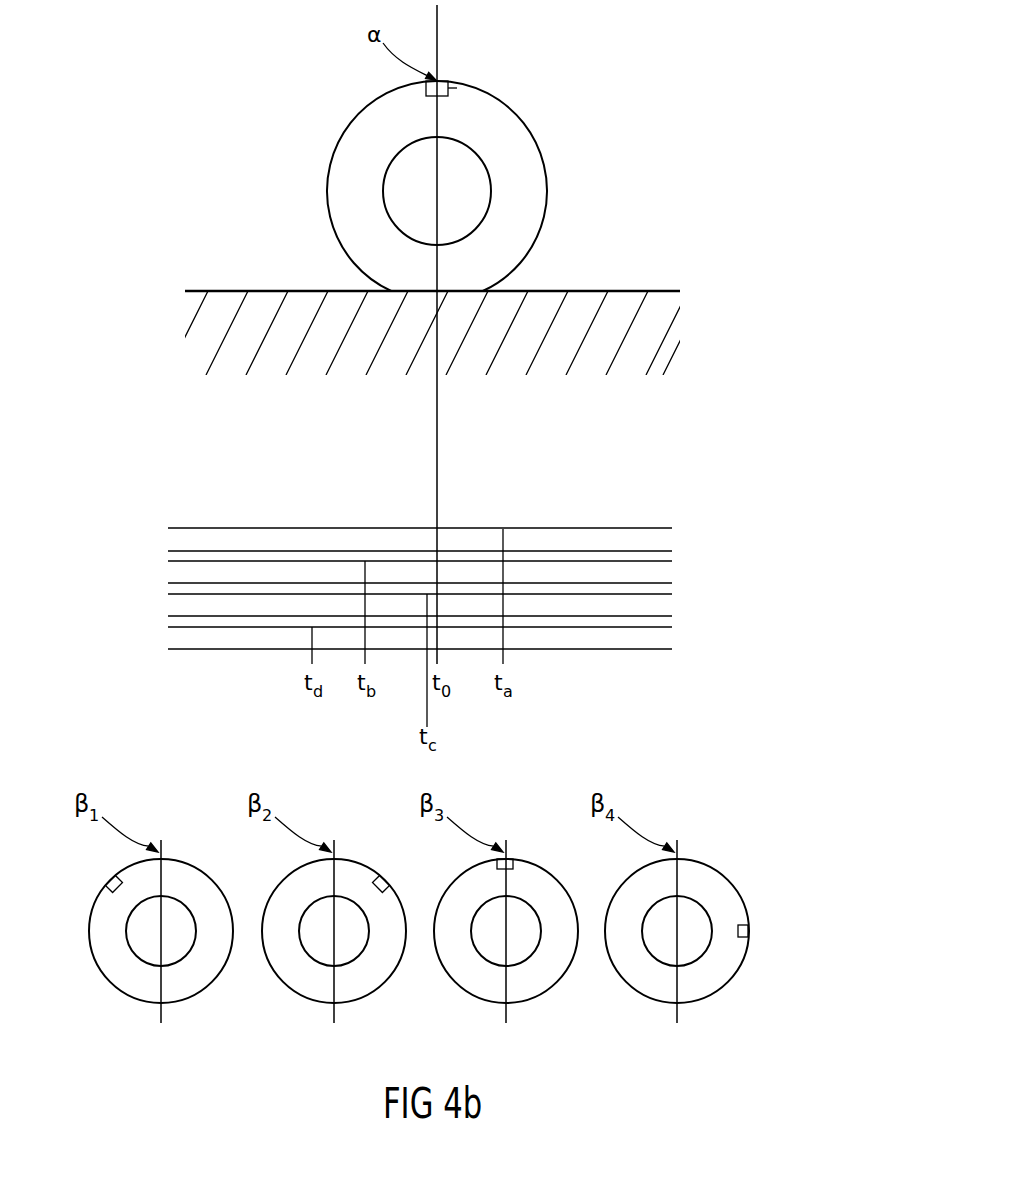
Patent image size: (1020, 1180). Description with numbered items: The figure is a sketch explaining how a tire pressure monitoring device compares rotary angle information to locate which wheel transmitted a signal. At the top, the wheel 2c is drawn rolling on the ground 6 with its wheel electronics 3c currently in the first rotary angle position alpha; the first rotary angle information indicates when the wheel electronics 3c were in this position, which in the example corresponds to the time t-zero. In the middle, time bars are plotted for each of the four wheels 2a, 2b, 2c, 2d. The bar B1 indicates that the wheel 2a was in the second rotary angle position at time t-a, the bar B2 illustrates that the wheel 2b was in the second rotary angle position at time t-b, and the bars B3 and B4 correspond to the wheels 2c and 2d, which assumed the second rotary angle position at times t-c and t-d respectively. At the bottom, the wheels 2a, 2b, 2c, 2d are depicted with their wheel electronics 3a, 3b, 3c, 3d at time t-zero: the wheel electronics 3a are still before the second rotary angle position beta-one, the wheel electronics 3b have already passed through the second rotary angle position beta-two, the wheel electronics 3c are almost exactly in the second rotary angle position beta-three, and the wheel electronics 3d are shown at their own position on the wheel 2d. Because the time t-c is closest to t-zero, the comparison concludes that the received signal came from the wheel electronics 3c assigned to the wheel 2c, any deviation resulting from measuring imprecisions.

The wheel 2a is at (200, 971).
The wheel 2b is at (373, 971).
The wheel 2c is at (523, 187).
The wheel 2d is at (716, 971).
The wheel electronics 3a is at (108, 882).
The wheel electronics 3b is at (386, 883).
The wheel electronics 3c is at (468, 86).
The wheel electronics 3d is at (749, 932).
The ground 6 is at (630, 300).
The bar B1 is at (662, 538).
The bar B2 is at (662, 570).
The bar B3 is at (662, 603).
The bar B4 is at (662, 635).